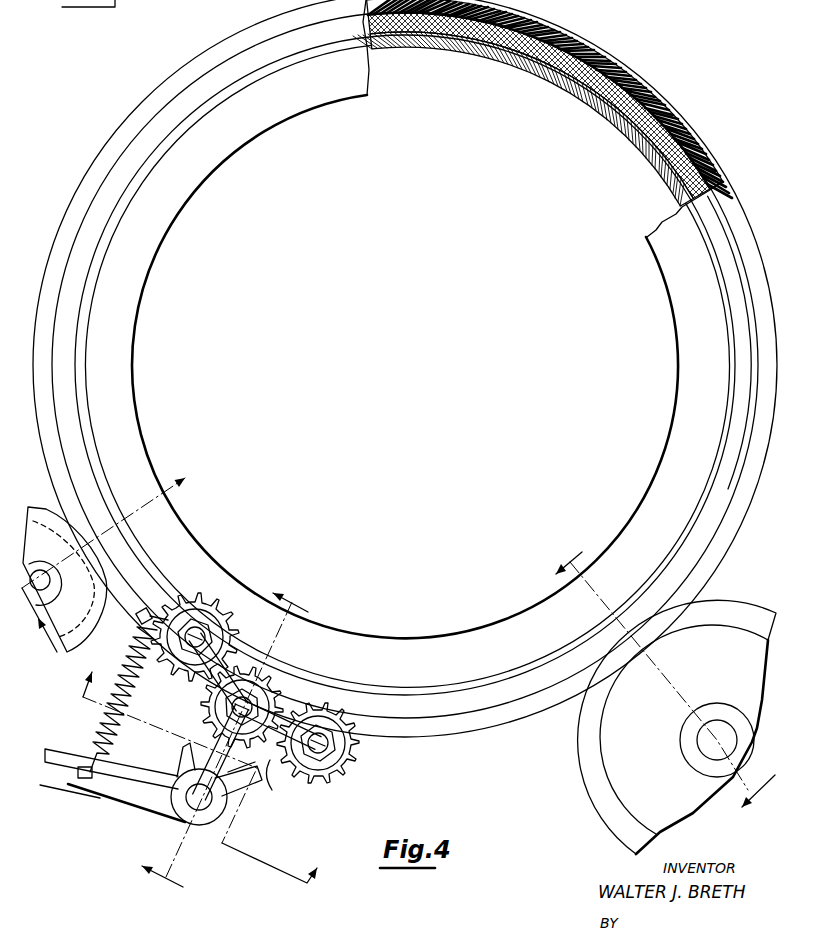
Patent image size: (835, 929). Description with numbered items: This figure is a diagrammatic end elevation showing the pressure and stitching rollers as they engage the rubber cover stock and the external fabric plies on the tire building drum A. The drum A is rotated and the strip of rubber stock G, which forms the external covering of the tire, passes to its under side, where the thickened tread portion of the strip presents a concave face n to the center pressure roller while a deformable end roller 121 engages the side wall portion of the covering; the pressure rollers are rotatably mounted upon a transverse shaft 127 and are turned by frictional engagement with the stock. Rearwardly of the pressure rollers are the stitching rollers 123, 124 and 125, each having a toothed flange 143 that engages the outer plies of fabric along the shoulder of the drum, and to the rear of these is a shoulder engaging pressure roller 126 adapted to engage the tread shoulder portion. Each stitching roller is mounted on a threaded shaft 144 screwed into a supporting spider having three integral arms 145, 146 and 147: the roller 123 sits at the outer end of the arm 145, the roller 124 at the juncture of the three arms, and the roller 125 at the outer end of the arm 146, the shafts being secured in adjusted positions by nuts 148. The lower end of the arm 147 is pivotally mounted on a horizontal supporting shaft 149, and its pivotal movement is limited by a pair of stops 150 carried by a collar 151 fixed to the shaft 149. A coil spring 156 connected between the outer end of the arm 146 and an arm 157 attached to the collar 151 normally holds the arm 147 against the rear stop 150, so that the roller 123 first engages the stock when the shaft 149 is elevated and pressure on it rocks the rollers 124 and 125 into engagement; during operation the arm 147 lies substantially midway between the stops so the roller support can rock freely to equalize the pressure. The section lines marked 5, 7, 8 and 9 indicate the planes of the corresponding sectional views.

The strip of rubber stock G is at (680, 102).
The drum A is at (507, 65).
The concave face n is at (630, 82).
The shoulder engaging pressure rollers 126 is at (47, 497).
The section line 7- 7 is at (111, 577).
The toothed flanges 143 is at (205, 600).
The threaded shaft 144 is at (352, 748).
The stitching roller 123 is at (348, 782).
The arm 146 is at (197, 678).
The nuts 148 is at (340, 733).
The arm 145 is at (283, 783).
The stitching roller 124 is at (207, 717).
The horizontal supporting shaft 149 is at (200, 812).
The collar 151 is at (178, 813).
The stops 150 is at (183, 752).
The arm 147 is at (235, 802).
The arm 157 is at (107, 780).
The coil spring 156 is at (132, 656).
The stitching roller 125 is at (143, 620).
The section line 8- 8 is at (191, 800).
The section line 9- 9 is at (235, 751).
The deformable end rollers 121 is at (613, 747).
The transverse shaft 127 is at (717, 727).
The section line 5- 5 is at (670, 667).